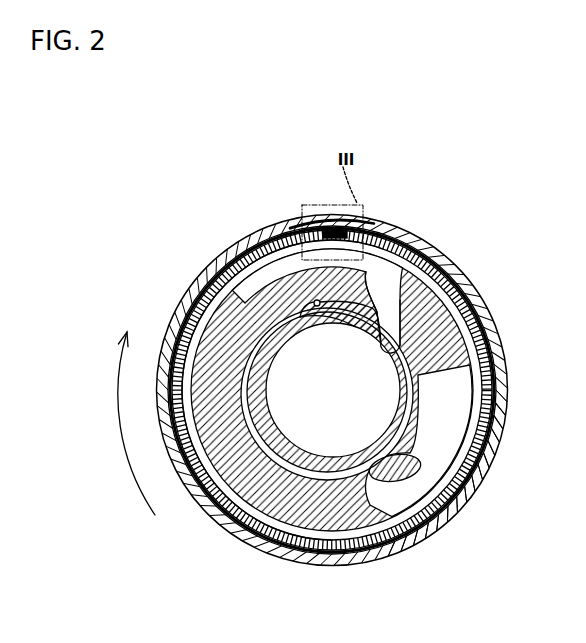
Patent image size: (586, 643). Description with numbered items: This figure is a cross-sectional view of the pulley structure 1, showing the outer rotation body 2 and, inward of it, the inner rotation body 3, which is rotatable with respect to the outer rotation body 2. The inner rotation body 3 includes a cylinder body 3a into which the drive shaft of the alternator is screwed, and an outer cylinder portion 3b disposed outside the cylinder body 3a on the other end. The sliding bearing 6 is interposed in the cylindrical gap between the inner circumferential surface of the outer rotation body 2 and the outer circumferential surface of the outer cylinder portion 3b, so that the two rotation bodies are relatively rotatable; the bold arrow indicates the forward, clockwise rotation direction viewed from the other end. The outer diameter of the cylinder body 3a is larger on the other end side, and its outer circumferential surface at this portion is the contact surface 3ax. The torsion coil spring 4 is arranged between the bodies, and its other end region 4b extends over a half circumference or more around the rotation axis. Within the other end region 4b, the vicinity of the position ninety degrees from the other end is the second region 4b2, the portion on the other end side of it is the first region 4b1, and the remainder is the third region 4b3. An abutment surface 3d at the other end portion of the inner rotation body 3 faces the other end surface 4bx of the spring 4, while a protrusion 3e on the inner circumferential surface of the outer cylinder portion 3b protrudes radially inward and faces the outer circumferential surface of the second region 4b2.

The pulley structure 1 is at (473, 143).
The outer rotation body 2 is at (333, 205).
The inner rotation body 3 is at (473, 292).
The cylinder body 3a is at (300, 443).
The contact surface 3ax is at (317, 306).
The outer cylinder portion 3b is at (278, 240).
The abutment surface 3d is at (407, 247).
The protrusion 3e is at (196, 304).
The torsion coil spring 4 is at (402, 483).
The other end region 4b is at (300, 545).
The first region 4b1 is at (265, 268).
The second region 4b2 is at (222, 337).
The third region 4b3 is at (236, 520).
The other end surface 4bx is at (384, 305).
The sliding bearing 6 is at (302, 226).